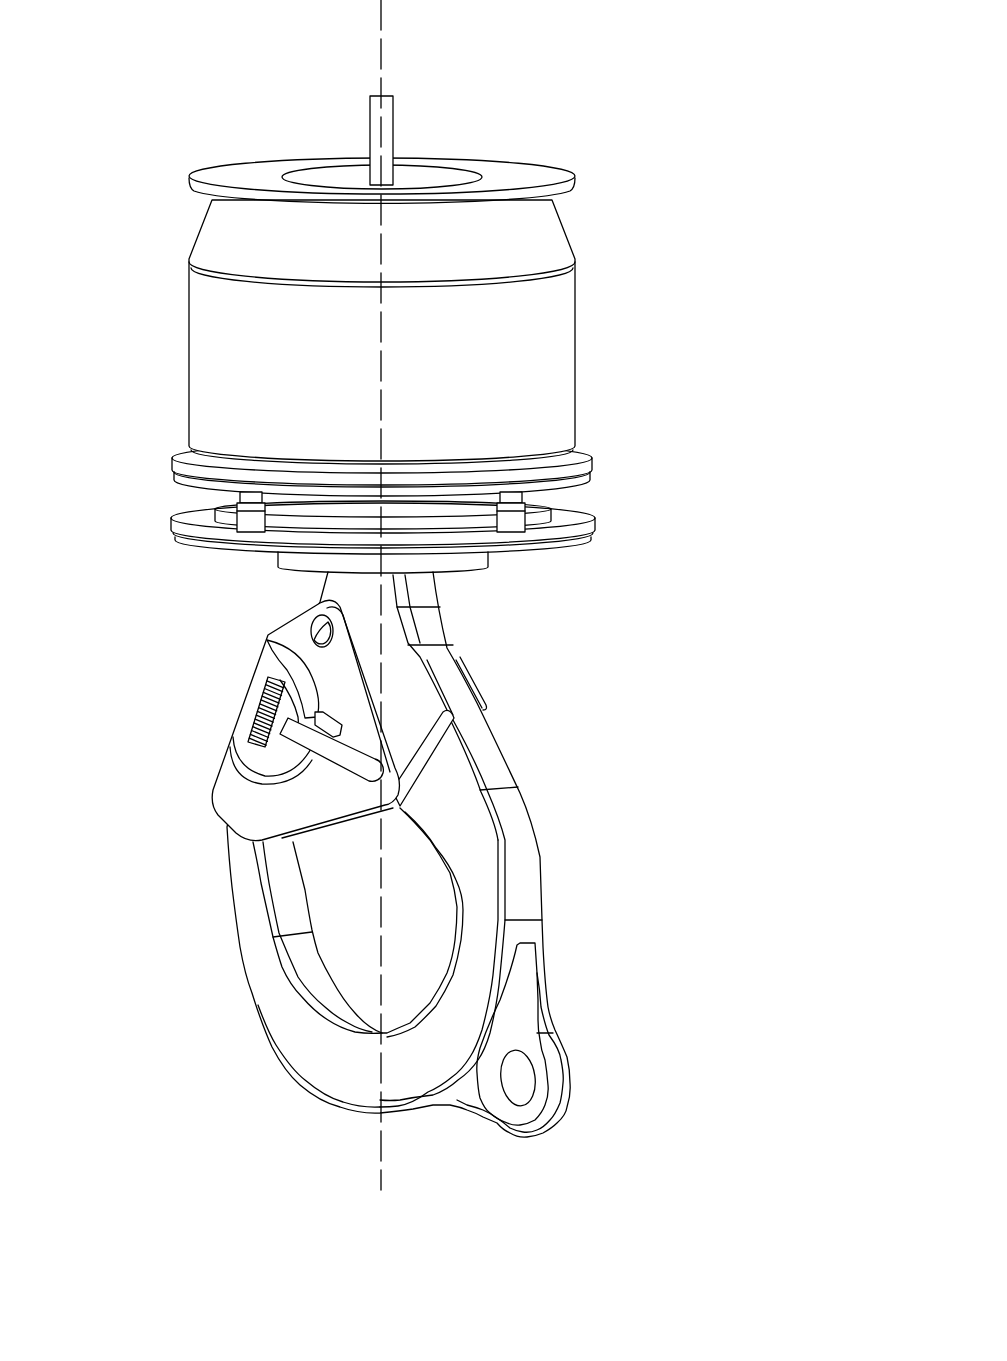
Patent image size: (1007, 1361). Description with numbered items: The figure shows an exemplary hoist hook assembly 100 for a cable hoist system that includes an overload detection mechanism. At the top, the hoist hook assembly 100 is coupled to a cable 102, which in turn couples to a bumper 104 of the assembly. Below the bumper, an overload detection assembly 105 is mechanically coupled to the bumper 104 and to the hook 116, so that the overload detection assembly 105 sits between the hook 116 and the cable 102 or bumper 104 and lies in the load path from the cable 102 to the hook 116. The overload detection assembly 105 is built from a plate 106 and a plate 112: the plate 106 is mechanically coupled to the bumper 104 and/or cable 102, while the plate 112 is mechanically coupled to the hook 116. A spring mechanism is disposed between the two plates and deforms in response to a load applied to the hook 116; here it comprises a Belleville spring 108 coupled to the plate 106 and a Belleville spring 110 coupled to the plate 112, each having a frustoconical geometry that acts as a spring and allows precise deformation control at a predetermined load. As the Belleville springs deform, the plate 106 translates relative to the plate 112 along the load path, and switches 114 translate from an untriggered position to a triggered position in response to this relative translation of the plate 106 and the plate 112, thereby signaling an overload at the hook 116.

The hoist hook assembly 100 is at (640, 72).
The cable 102 is at (390, 128).
The bumper 104 is at (196, 340).
The overload detection assembly 105 is at (166, 502).
The plate 106 is at (592, 466).
The Belleville spring 108 is at (427, 505).
The Belleville spring 110 is at (467, 518).
The plate 112 is at (583, 533).
The switches 114 is at (243, 521).
The hook 116 is at (525, 842).